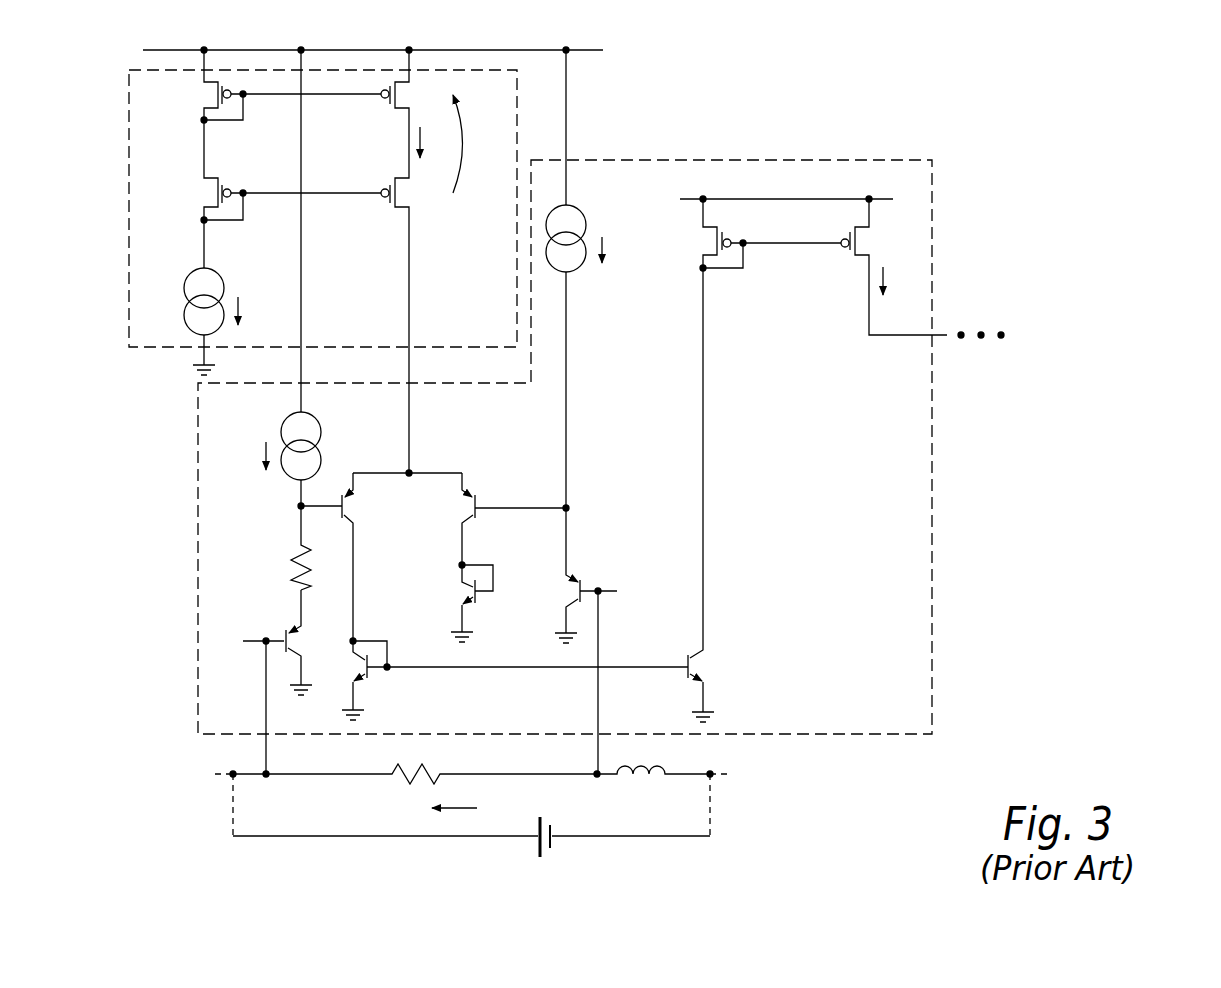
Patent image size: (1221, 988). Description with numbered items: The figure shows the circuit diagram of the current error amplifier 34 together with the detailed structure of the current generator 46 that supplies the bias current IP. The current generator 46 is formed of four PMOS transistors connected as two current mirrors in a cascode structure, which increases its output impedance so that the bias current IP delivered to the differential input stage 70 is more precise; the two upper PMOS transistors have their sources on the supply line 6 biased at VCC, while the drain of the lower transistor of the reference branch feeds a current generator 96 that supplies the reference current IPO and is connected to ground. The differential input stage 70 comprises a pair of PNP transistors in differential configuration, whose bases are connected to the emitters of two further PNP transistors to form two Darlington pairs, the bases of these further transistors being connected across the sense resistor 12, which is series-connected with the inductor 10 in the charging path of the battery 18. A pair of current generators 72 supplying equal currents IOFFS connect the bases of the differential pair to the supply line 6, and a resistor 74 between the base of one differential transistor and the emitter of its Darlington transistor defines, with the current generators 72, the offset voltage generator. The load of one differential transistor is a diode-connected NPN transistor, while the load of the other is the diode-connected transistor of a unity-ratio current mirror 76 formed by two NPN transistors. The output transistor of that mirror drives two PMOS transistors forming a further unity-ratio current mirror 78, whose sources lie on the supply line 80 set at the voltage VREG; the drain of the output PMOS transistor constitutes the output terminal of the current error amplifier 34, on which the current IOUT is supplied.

The supply line 6 is at (360, 50).
The current generator 46 is at (291, 261).
The current generator 96 is at (193, 270).
The current generators 72 is at (578, 210).
The resistor 74 is at (290, 568).
The current error amplifier 34 is at (878, 160).
The supply line 80 is at (802, 199).
The current mirror 78 is at (842, 285).
The differential input stage 70 is at (579, 518).
The current mirror 76 is at (489, 680).
The sense resistor 12 is at (427, 774).
The inductor 10 is at (645, 774).
The battery 18 is at (566, 847).